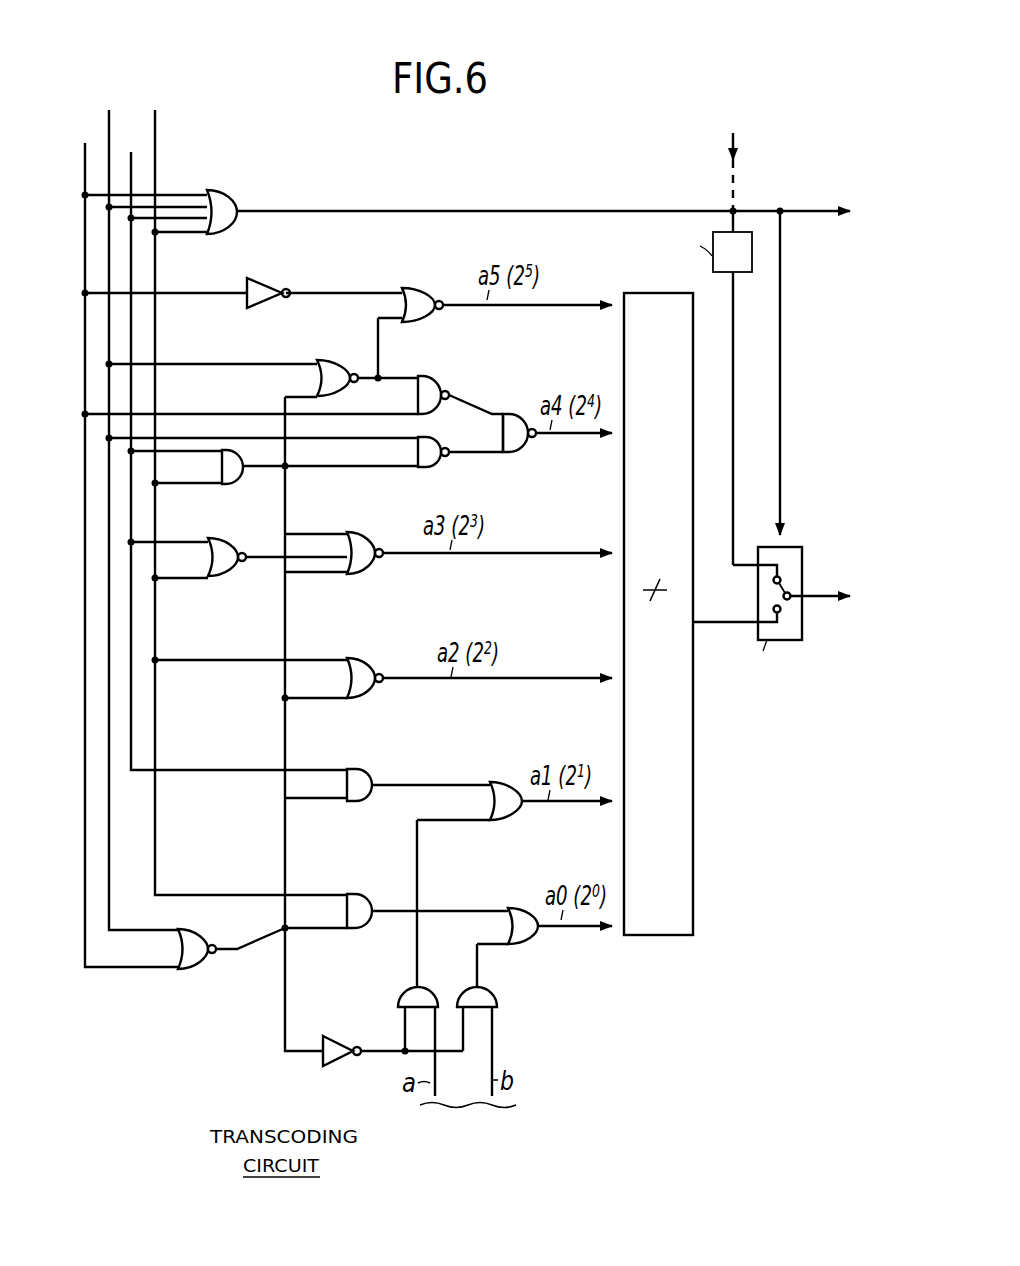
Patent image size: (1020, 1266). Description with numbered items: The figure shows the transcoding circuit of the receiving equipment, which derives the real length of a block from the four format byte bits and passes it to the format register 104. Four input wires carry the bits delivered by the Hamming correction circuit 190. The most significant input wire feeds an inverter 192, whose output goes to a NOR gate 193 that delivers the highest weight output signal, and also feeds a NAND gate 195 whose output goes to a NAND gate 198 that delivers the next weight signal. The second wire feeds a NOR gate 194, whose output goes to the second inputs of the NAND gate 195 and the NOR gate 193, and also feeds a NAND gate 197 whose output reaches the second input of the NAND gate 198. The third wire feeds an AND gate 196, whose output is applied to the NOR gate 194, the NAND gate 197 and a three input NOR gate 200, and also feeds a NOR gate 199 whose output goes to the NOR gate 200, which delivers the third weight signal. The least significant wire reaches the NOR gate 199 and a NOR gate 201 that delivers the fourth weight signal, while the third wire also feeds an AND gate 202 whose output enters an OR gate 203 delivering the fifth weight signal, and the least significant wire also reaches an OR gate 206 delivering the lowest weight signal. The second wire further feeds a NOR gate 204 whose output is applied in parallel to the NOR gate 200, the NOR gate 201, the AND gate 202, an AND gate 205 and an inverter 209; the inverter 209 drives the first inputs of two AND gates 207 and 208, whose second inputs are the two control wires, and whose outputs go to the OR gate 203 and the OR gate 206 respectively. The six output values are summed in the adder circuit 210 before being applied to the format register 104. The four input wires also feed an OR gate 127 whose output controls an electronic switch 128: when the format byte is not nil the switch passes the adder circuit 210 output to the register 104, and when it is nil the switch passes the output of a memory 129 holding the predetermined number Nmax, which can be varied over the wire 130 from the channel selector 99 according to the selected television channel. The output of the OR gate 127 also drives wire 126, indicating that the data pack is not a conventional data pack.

The Hamming correction circuit 190 is at (88, 140).
The OR gate 127 is at (220, 198).
The wire 126 is at (836, 200).
The inverter 192 is at (258, 285).
The NOR gate 193 is at (409, 286).
The NOR gate 194 is at (325, 356).
The NAND gate 195 is at (426, 372).
The AND gate 196 is at (244, 476).
The NAND gate 197 is at (434, 456).
The NAND gate 198 is at (513, 414).
The NOR gate 199 is at (218, 578).
The three input NOR gate 200 is at (362, 528).
The NOR gate 201 is at (362, 648).
The AND gate 202 is at (362, 760).
The OR gate 203 is at (498, 772).
The NOR gate 204 is at (183, 970).
The AND gate 205 is at (356, 893).
The OR gate 206 is at (520, 892).
The AND gate 207 is at (408, 995).
The AND gate 208 is at (496, 1000).
The inverter 209 is at (331, 1045).
The adder circuit 210 is at (660, 296).
The channel selector 99 is at (732, 145).
The wire 130 is at (729, 190).
The memory 129 is at (682, 250).
The electronic switch 128 is at (757, 604).
The format register 104 is at (820, 627).